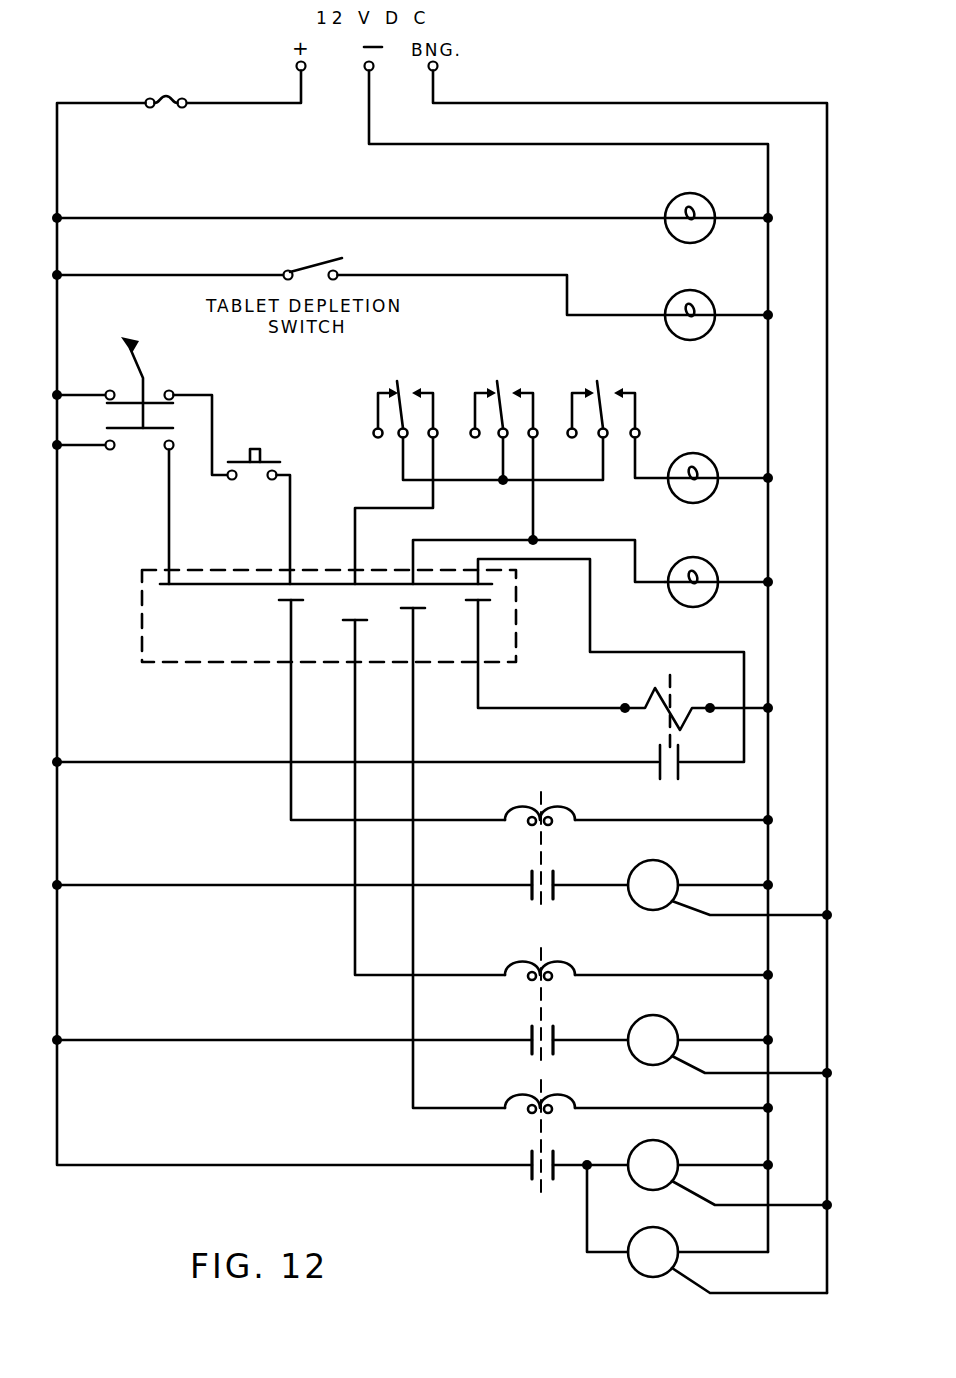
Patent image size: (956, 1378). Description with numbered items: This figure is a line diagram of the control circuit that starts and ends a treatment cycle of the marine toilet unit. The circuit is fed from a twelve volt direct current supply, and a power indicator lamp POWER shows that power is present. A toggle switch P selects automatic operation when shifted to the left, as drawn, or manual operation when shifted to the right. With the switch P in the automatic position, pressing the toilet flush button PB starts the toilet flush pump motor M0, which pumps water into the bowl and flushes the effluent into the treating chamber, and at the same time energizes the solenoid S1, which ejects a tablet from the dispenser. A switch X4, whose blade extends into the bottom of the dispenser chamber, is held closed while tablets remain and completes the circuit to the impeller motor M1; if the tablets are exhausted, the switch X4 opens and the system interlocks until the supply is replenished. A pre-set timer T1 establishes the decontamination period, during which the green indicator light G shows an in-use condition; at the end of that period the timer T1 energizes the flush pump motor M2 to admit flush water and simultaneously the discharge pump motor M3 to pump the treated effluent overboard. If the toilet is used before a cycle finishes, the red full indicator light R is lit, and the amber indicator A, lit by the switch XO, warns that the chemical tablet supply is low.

The power indicator lamp POWER is at (412, 198).
The switch X-O XO is at (311, 262).
The amber indicator A is at (710, 297).
The toggle switch P is at (142, 337).
The toilet flush button PB is at (259, 504).
The red indicator light R is at (711, 461).
The green indicator light G is at (711, 565).
The timer T1 is at (156, 665).
The solenoid S1 is at (694, 712).
The switch X-4 X4 is at (383, 770).
The toilet flush pump motor M0 is at (690, 887).
The impeller motor M1 is at (690, 1044).
The flush pump motor M2 is at (690, 1172).
The discharge pump motor M3 is at (707, 1229).